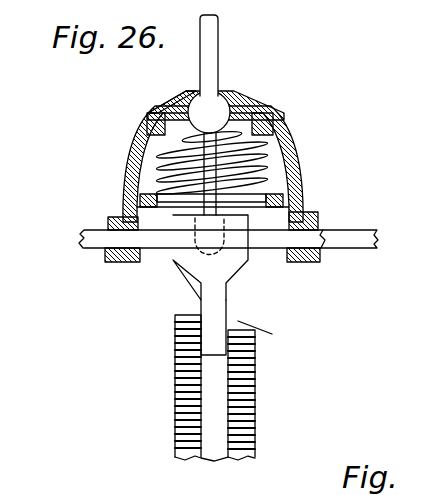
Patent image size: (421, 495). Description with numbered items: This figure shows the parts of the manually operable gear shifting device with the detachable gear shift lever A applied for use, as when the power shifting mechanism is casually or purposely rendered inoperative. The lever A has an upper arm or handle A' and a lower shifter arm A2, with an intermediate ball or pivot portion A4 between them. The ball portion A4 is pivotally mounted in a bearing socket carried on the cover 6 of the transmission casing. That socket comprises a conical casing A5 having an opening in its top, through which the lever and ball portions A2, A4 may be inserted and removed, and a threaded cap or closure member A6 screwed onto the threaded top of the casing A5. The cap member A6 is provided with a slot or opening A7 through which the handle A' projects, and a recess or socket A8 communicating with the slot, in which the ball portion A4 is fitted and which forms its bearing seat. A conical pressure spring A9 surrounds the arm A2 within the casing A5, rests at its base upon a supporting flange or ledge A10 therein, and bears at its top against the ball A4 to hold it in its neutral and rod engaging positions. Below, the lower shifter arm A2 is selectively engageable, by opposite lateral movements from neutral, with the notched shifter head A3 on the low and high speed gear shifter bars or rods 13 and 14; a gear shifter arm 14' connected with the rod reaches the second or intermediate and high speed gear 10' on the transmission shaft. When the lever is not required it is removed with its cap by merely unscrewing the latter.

The gear shift lever A is at (227, 48).
The upper arm or handle A' is at (225, 90).
The lower shifter arm A2 is at (264, 140).
The notched shifter head A3 is at (228, 263).
The ball or pivot portion A4 is at (258, 112).
The conical casing A5 is at (150, 143).
The threaded cap or closure member A6 is at (273, 121).
The slot or opening A7 is at (195, 91).
The recess or socket A8 is at (257, 94).
The conical pressure spring A9 is at (180, 158).
The supporting flange or ledge A10 is at (125, 216).
The high speed gear shifter bar or rod 14 is at (191, 257).
The low speed gear shifter bar or rod 13 is at (367, 240).
The gear shifter arm 14' is at (188, 317).
The transmission casing cover 6 is at (130, 264).
The second or intermediate and high speed gear 10' is at (198, 388).